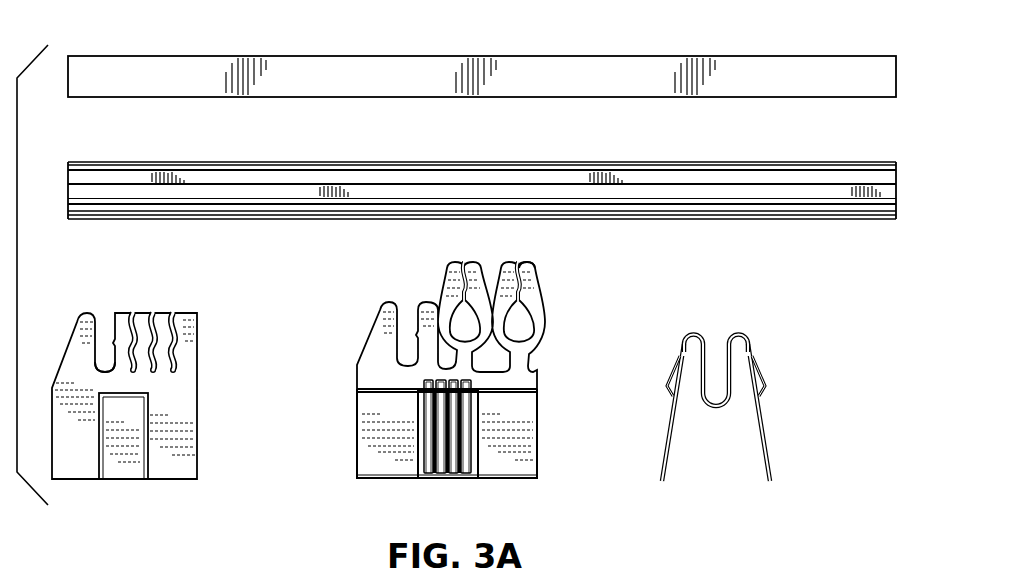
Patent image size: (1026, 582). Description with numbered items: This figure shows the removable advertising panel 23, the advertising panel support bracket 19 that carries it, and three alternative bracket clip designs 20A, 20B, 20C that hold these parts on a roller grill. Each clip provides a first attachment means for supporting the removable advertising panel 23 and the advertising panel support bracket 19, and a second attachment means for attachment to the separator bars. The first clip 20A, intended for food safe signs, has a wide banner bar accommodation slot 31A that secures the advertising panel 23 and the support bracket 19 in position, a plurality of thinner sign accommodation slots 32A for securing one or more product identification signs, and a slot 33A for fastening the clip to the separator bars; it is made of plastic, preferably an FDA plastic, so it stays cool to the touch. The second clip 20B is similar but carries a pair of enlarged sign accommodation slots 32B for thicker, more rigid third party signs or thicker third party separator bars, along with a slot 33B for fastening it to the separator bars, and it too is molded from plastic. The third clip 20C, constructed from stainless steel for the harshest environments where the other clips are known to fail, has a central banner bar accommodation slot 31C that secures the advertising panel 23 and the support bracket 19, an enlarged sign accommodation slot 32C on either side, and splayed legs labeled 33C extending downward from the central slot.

The advertising panel support bracket 19 is at (898, 180).
The removable advertising panel 23 is at (808, 56).
The first clip 20A is at (173, 395).
The wide banner bar accommodation slot 31A is at (107, 320).
The thinner sign accommodation slots 32A is at (162, 312).
The slot 33A is at (120, 467).
The second clip 20B is at (496, 377).
The enlarged sign accommodation slots 32B is at (527, 262).
The slot 33B is at (453, 468).
The third clip 20C is at (762, 400).
The central banner bar accommodation slot 31C is at (700, 330).
The enlarged sign accommodation slot 32C is at (832, 337).
The leg 33C is at (699, 452).